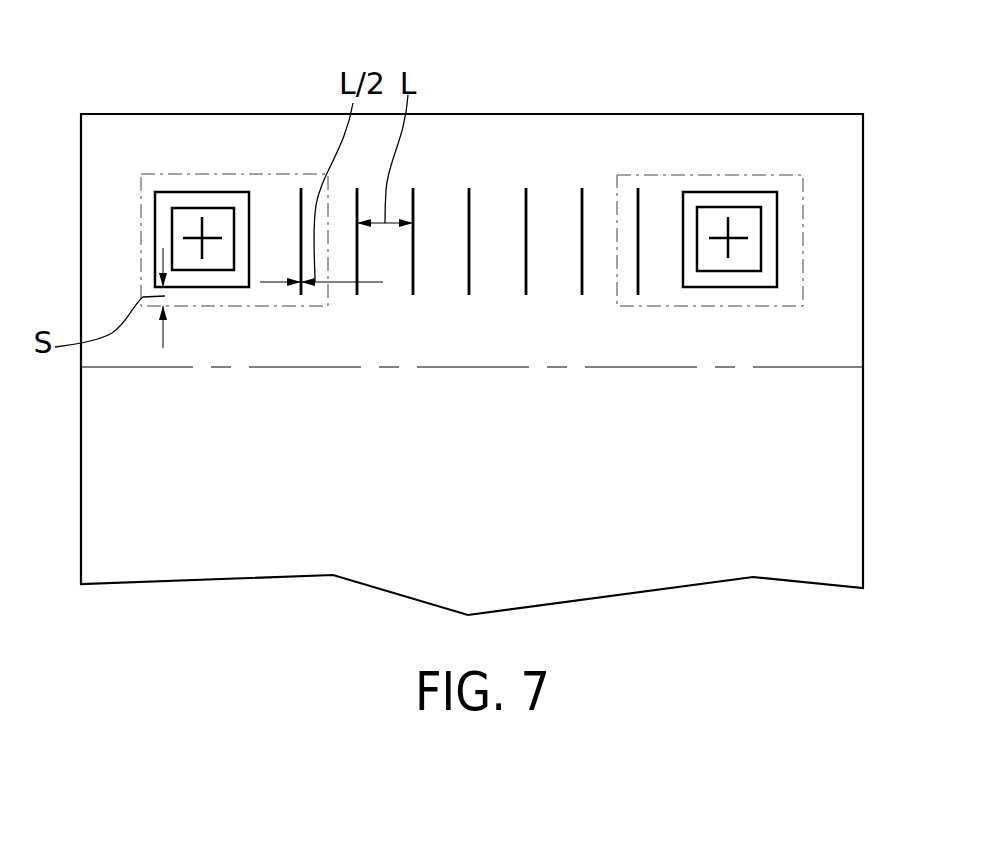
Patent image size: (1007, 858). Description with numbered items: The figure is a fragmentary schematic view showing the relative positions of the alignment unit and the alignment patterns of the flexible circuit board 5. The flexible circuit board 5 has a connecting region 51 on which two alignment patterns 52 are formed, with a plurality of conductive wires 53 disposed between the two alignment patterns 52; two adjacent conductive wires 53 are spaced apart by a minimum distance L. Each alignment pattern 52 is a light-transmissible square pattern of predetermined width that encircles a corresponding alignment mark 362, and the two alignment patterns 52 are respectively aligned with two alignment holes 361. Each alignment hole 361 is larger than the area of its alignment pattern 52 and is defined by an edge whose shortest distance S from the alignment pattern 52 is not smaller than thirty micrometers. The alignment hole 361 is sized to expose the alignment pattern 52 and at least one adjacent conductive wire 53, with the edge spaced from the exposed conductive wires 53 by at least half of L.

The flexible circuit board 5 is at (813, 445).
The connecting region 51 is at (832, 292).
The alignment pattern 52 is at (183, 195).
The conductive wire 53 is at (469, 198).
The alignment hole 361 is at (272, 173).
The alignment mark 362 is at (203, 236).